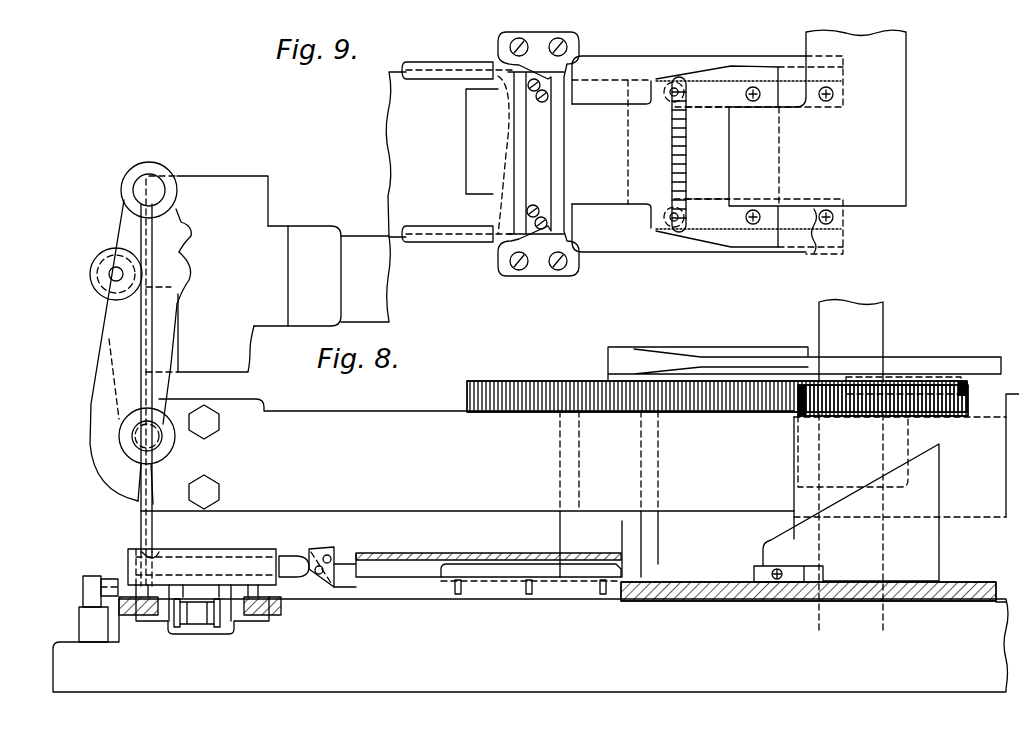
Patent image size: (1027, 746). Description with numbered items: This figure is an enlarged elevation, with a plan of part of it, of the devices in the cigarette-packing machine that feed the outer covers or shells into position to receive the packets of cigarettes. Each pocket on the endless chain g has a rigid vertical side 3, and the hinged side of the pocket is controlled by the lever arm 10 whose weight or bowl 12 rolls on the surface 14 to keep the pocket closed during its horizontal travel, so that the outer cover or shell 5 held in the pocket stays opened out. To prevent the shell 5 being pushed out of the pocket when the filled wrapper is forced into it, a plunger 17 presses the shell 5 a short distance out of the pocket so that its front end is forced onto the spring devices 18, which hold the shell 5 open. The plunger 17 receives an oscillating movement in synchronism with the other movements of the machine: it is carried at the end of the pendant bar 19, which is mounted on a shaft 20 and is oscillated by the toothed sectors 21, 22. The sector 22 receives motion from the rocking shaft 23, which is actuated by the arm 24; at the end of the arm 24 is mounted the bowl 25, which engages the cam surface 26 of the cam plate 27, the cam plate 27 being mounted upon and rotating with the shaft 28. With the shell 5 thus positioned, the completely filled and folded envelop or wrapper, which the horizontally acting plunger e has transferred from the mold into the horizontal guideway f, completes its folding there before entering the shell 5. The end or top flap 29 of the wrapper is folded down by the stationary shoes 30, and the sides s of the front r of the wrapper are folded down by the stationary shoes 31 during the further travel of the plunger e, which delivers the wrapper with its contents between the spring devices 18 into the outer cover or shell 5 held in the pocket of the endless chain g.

In FIG. 8, the vertical side 3 is at (193, 553).
In FIG. 9, the outer cover or shell 5 is at (451, 152).
In FIG. 8, the outer cover or shell 5 is at (283, 553).
In FIG. 8, the lever arm 10 is at (107, 594).
In FIG. 8, the weight or bowl 12 is at (82, 578).
In FIG. 8, the surface 14 is at (78, 604).
In FIG. 8, the plunger 17 is at (138, 546).
In FIG. 9, the spring devices 18 is at (510, 95).
In FIG. 8, the spring devices 18 is at (312, 548).
In FIG. 8, the pendant bar 19 is at (136, 470).
In FIG. 8, the shaft 20 is at (132, 186).
In FIG. 8, the toothed sector 21 is at (188, 229).
In FIG. 8, the toothed sector 22 is at (188, 273).
In FIG. 8, the rocking shaft 23 is at (160, 434).
In FIG. 8, the arm 24 is at (104, 336).
In FIG. 8, the bowl 25 is at (94, 272).
In FIG. 8, the cam surface 26 is at (147, 300).
In FIG. 8, the cam plate 27 is at (208, 180).
In FIG. 8, the shaft 28 is at (342, 237).
In FIG. 9, the end or top flap 29 is at (661, 154).
In FIG. 8, the end or top flap 29 is at (628, 540).
In FIG. 9, the stationary shoes 30 is at (606, 97).
In FIG. 8, the stationary shoes 30 is at (604, 553).
In FIG. 9, the stationary shoes 31 is at (692, 70).
In FIG. 9, the outer side flaps s is at (748, 66).
In FIG. 9, the front r is at (707, 153).
In FIG. 8, the front r is at (773, 567).
In FIG. 9, the plunger e is at (817, 118).
In FIG. 8, the plunger e is at (886, 488).
In FIG. 9, the horizontal guideway f is at (838, 222).
In FIG. 8, the horizontal guideway f is at (993, 573).
In FIG. 8, the endless chain g is at (205, 615).